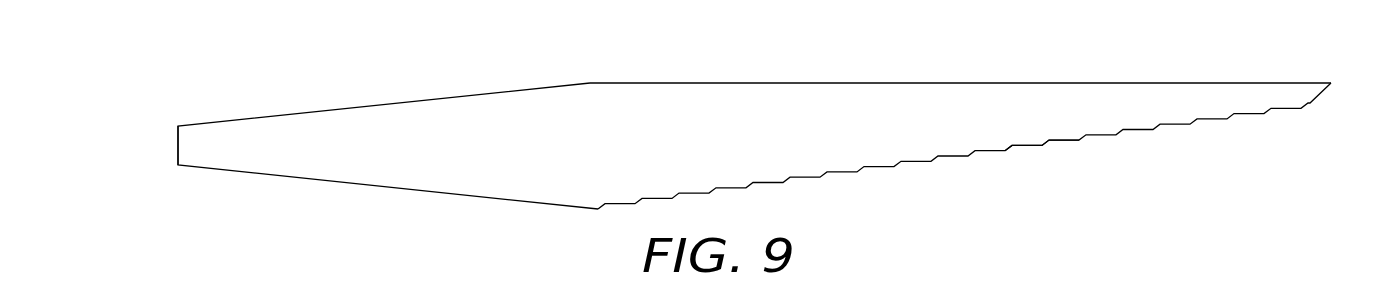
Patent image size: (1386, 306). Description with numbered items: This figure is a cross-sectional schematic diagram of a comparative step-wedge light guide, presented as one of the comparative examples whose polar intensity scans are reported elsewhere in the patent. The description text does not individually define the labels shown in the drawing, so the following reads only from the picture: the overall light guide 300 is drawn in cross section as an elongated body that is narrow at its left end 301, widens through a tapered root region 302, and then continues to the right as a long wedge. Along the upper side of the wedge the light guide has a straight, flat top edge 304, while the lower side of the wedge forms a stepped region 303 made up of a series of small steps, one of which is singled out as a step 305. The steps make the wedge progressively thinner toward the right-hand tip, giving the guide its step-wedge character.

The fin / blade structure 300 is at (447, 56).
The base end 301 is at (178, 148).
The tapered root section 302 is at (417, 155).
The stepped section 303 is at (892, 137).
The straight top edge 304 is at (1109, 78).
The step 305 is at (1045, 156).